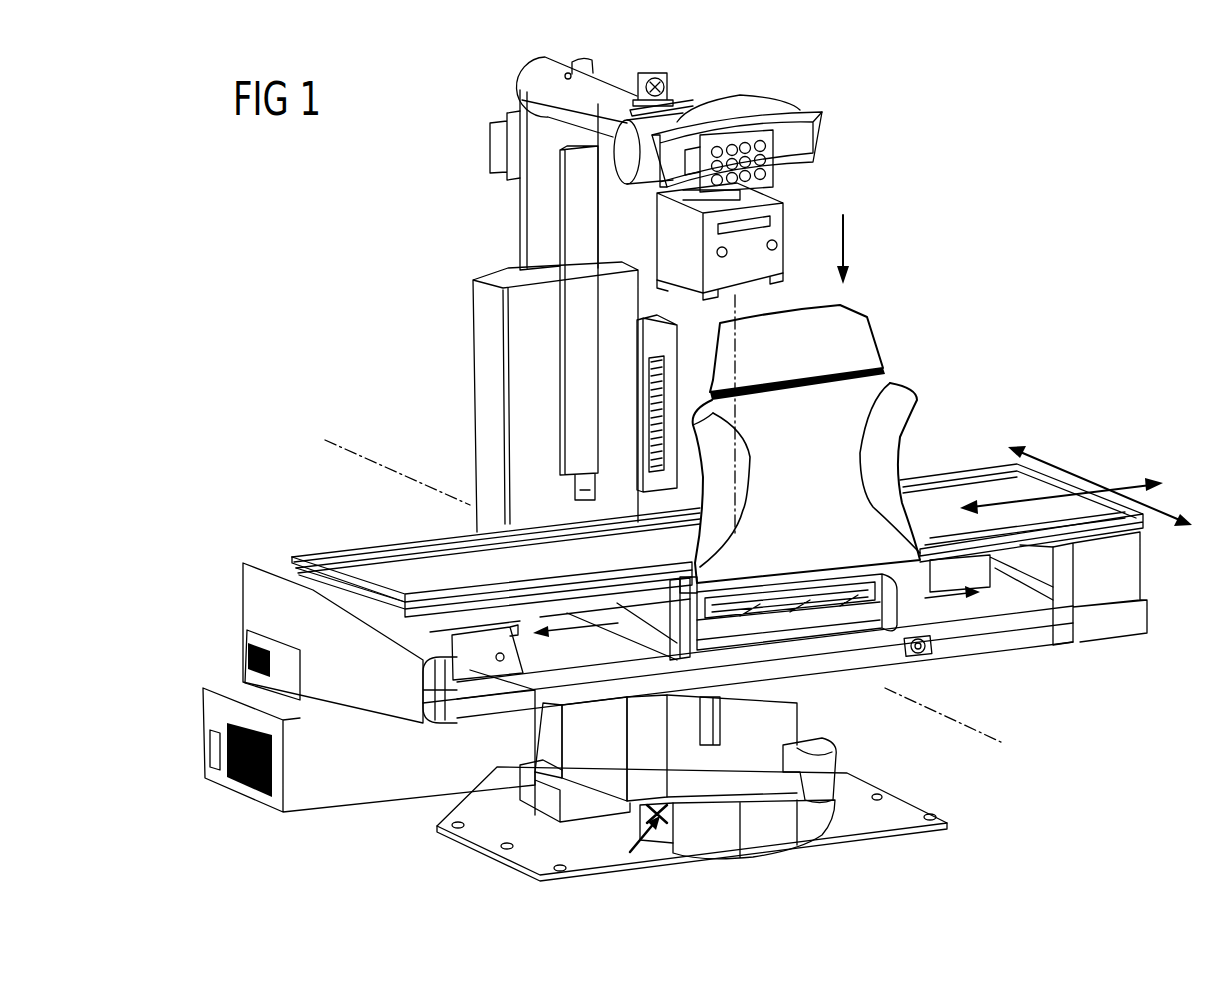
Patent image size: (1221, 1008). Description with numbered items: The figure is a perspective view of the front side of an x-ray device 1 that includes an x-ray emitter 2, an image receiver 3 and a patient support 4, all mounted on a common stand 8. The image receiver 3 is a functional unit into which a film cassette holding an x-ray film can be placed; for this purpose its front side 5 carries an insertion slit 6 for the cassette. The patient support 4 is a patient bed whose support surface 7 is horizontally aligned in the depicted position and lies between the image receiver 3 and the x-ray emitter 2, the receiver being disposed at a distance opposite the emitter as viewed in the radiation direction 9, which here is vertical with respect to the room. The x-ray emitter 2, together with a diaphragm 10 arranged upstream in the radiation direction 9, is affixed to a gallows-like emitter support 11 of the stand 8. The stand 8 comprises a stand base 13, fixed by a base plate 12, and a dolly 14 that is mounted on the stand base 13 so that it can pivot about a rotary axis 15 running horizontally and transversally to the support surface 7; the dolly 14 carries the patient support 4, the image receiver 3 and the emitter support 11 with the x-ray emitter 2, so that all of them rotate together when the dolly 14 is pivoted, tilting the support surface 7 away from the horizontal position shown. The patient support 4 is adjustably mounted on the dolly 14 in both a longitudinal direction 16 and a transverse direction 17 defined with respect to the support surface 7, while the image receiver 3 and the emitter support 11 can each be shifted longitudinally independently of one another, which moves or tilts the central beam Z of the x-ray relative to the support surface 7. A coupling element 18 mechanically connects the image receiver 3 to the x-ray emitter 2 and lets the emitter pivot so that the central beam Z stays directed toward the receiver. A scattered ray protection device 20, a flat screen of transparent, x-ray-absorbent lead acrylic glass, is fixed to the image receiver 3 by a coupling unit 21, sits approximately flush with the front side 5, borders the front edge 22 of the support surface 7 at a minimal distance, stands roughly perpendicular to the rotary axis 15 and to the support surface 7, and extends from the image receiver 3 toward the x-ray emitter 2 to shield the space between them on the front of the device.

The x-ray device 1 is at (286, 270).
The x-ray emitter 2 is at (730, 106).
The image receiver 3 is at (905, 610).
The patient support 4 is at (957, 470).
The front side 5 is at (820, 632).
The insertion slit 6 is at (753, 623).
The support surface 7 is at (412, 577).
The stand 8 is at (482, 366).
The radiation direction 9 is at (849, 253).
The diaphragm 10 is at (790, 216).
The emitter support 11 is at (553, 90).
The base plate 12 is at (900, 808).
The stand base 13 is at (790, 820).
The dolly 14 is at (873, 703).
The rotary axis 15 is at (358, 444).
The longitudinal direction 16 is at (1130, 486).
The transverse direction 17 is at (1048, 456).
The coupling element 18 is at (578, 212).
The scattered ray protection device 20 is at (890, 380).
The coupling unit 21 is at (683, 585).
The front edge 22 is at (560, 597).
The central beam Z is at (738, 481).